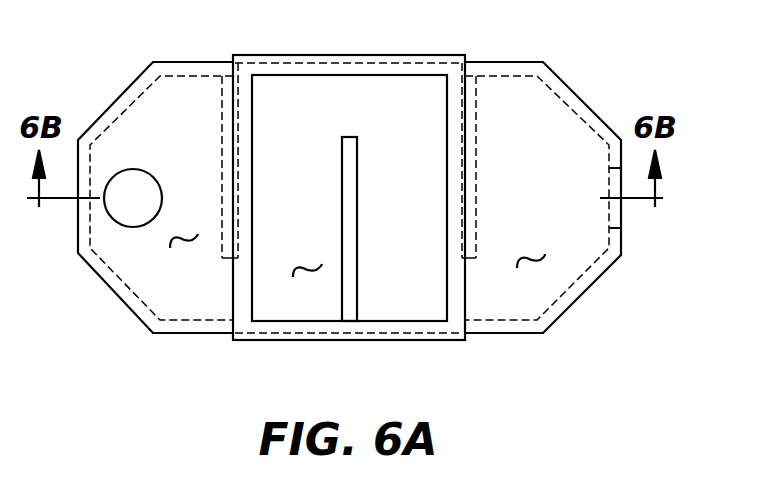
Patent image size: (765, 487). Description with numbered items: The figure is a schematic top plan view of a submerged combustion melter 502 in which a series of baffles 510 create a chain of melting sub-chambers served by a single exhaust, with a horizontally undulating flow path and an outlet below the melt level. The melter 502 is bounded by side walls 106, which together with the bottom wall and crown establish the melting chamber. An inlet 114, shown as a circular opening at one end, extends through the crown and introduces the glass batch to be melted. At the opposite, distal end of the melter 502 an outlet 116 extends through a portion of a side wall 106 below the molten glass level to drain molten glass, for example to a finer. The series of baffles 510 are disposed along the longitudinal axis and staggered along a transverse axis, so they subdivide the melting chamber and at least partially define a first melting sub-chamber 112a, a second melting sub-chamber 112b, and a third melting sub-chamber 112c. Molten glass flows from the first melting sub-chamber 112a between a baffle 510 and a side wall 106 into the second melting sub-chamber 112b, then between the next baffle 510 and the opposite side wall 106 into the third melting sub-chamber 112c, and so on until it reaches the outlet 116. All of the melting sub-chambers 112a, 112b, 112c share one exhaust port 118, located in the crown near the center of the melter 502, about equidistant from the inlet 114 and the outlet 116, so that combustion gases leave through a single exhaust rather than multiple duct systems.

The side wall 106 is at (527, 63).
The exhaust port 118 is at (410, 126).
The baffle 510 is at (222, 115).
The inlet 114 is at (115, 221).
The outlet 116 is at (618, 217).
The first melting sub-chamber 112a is at (183, 250).
The second melting sub-chamber 112b is at (306, 278).
The third melting sub-chamber 112c is at (530, 265).
The submerged combustion melter 502 is at (394, 198).